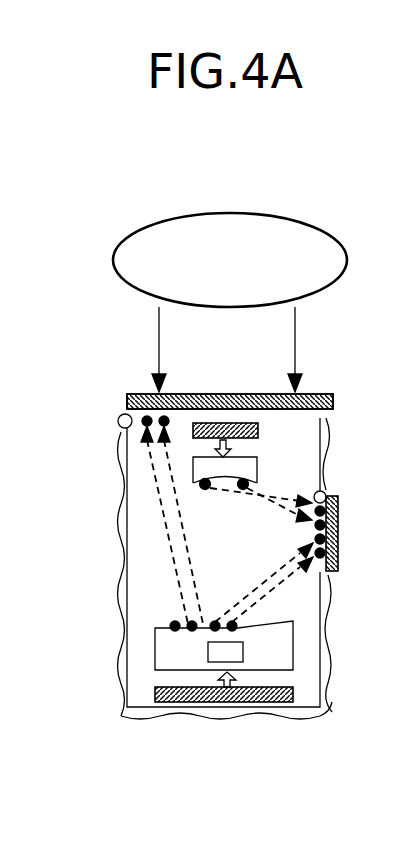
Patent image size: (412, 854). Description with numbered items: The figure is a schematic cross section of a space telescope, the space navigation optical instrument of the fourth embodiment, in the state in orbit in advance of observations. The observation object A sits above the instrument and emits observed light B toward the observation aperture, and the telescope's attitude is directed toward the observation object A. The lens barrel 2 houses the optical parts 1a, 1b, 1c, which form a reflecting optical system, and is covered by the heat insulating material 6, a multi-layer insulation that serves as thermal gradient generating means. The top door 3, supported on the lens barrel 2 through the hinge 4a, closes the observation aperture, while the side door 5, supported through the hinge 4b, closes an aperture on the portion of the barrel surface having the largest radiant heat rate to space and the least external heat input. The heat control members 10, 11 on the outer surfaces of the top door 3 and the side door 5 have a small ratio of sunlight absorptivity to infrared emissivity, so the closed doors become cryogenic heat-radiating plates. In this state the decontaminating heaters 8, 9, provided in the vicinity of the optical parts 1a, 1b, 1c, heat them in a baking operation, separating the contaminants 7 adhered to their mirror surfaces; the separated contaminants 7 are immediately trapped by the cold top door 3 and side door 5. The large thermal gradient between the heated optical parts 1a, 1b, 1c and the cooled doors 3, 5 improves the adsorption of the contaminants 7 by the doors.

The observation object A is at (230, 213).
The observed light B is at (297, 342).
The heat control member 10 is at (250, 394).
The top door 3 is at (336, 399).
The hinge 4a is at (118, 416).
The lens barrel 2 is at (125, 532).
The heat insulating material 6 is at (112, 463).
The heat control member 11 is at (340, 538).
The decontaminating heater 8 is at (258, 702).
The decontaminating heater 9 is at (262, 432).
The optical part 1b is at (257, 465).
The hinge 4b is at (328, 496).
The side door 5 is at (340, 564).
The contaminants 7 is at (172, 624).
The optical part 1a is at (243, 652).
The optical part 1c is at (257, 698).